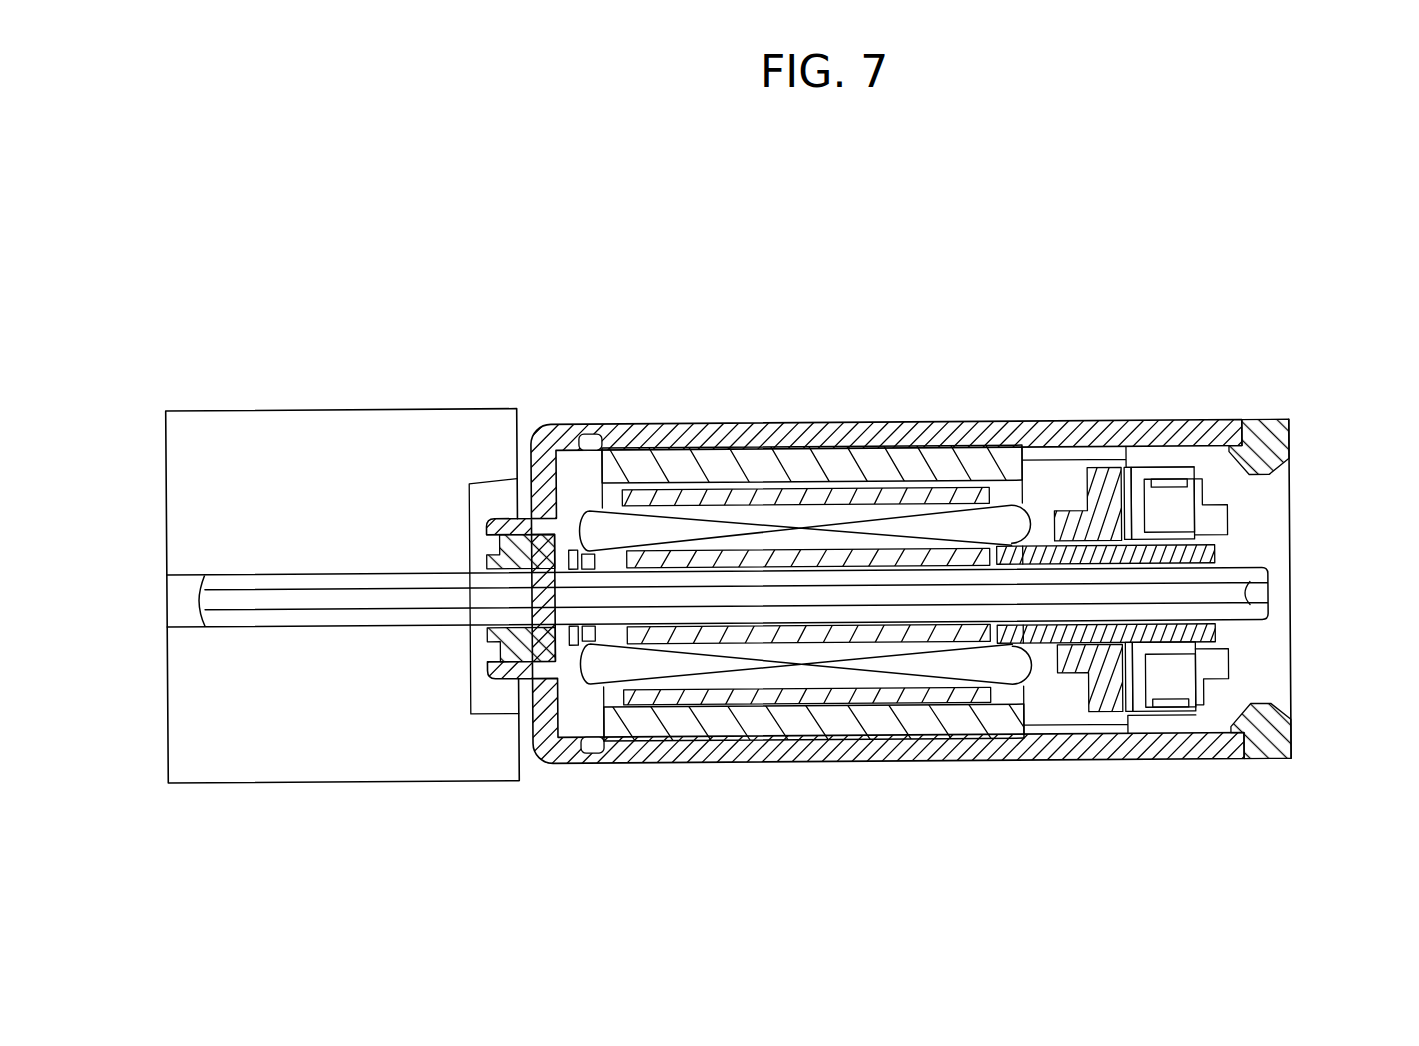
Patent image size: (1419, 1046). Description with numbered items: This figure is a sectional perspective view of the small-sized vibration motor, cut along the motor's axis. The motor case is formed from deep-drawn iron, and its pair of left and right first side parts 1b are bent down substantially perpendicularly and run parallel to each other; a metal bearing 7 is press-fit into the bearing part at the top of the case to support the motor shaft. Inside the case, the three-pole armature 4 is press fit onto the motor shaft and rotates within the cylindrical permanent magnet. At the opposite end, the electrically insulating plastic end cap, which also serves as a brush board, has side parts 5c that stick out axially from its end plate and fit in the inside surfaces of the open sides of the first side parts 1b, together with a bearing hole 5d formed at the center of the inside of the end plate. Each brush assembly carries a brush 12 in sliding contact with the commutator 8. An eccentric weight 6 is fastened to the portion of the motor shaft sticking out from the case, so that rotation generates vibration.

The first side part 1b is at (858, 424).
The three-pole armature 4 is at (752, 500).
The side part 5c is at (1290, 453).
The bearing hole 5d is at (1268, 602).
The eccentric weight 6 is at (343, 414).
The metal bearing 7 is at (517, 678).
The commutator 8 is at (1230, 540).
The brush 12 is at (1165, 505).